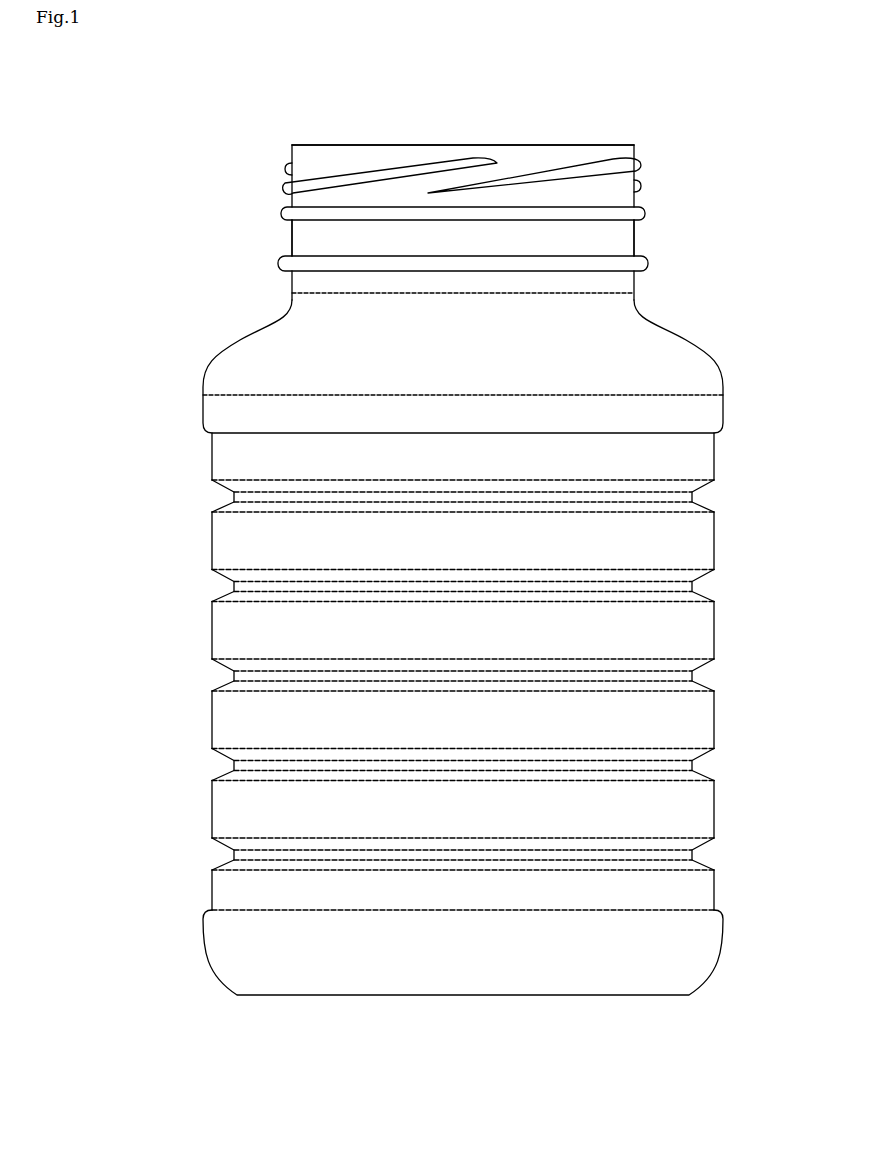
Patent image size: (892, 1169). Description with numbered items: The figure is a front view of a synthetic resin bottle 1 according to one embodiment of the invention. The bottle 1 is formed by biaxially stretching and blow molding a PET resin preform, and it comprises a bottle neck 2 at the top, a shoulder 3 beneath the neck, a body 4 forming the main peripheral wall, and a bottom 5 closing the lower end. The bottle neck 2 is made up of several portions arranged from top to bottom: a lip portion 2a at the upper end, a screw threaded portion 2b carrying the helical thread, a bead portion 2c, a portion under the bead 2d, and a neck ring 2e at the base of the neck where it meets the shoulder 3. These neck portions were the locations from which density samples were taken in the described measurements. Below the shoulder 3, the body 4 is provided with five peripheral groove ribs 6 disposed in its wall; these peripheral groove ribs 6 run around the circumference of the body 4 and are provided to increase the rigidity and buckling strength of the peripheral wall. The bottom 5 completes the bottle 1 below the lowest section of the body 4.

The bottle 1 is at (255, 166).
The bottle neck 2 is at (286, 246).
The lip portion 2a is at (607, 152).
The screw threaded portion 2b is at (624, 161).
The bead portion 2c is at (614, 213).
The portion under the bead 2d is at (618, 231).
The neck ring 2e is at (622, 264).
The shoulder 3 is at (243, 335).
The body 4 is at (252, 637).
The bottom 5 is at (318, 960).
The peripheral groove rib 6 is at (597, 583).